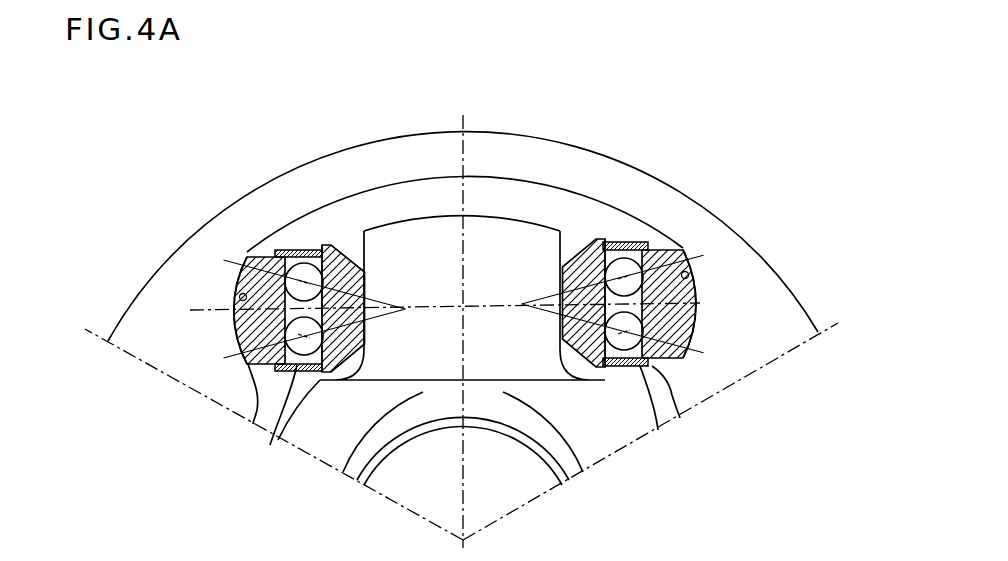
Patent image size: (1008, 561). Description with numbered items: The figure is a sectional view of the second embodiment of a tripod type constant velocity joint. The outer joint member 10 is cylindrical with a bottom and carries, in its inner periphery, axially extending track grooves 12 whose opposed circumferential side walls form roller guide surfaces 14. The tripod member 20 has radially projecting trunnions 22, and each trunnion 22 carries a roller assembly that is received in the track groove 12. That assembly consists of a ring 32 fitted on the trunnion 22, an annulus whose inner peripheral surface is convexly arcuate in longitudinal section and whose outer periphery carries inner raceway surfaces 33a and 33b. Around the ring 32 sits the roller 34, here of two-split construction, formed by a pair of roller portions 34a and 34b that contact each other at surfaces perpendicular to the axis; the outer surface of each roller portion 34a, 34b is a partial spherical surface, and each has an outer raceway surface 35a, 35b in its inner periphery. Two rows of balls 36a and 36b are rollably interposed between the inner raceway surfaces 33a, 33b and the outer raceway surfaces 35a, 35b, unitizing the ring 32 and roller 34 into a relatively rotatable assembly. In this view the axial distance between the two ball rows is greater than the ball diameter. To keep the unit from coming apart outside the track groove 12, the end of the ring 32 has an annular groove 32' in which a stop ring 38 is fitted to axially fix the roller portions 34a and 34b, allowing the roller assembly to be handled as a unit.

The outer joint member 10 is at (350, 148).
The track groove 12 is at (433, 197).
The roller guide surface 14 is at (233, 304).
The tripod member 20 is at (437, 400).
The trunnion 22 is at (483, 233).
The ring 32 is at (464, 288).
The annular groove 32' is at (492, 226).
The inner raceway surface 33a is at (275, 426).
The inner raceway surface 33b is at (300, 262).
The roller 34 is at (876, 276).
The roller portion 34a is at (692, 302).
The roller portion 34b is at (698, 274).
The outer raceway surface 35a is at (285, 333).
The outer raceway surface 35b is at (288, 282).
The balls 36a is at (627, 366).
The balls 36b is at (678, 249).
The stop ring 38 is at (648, 243).